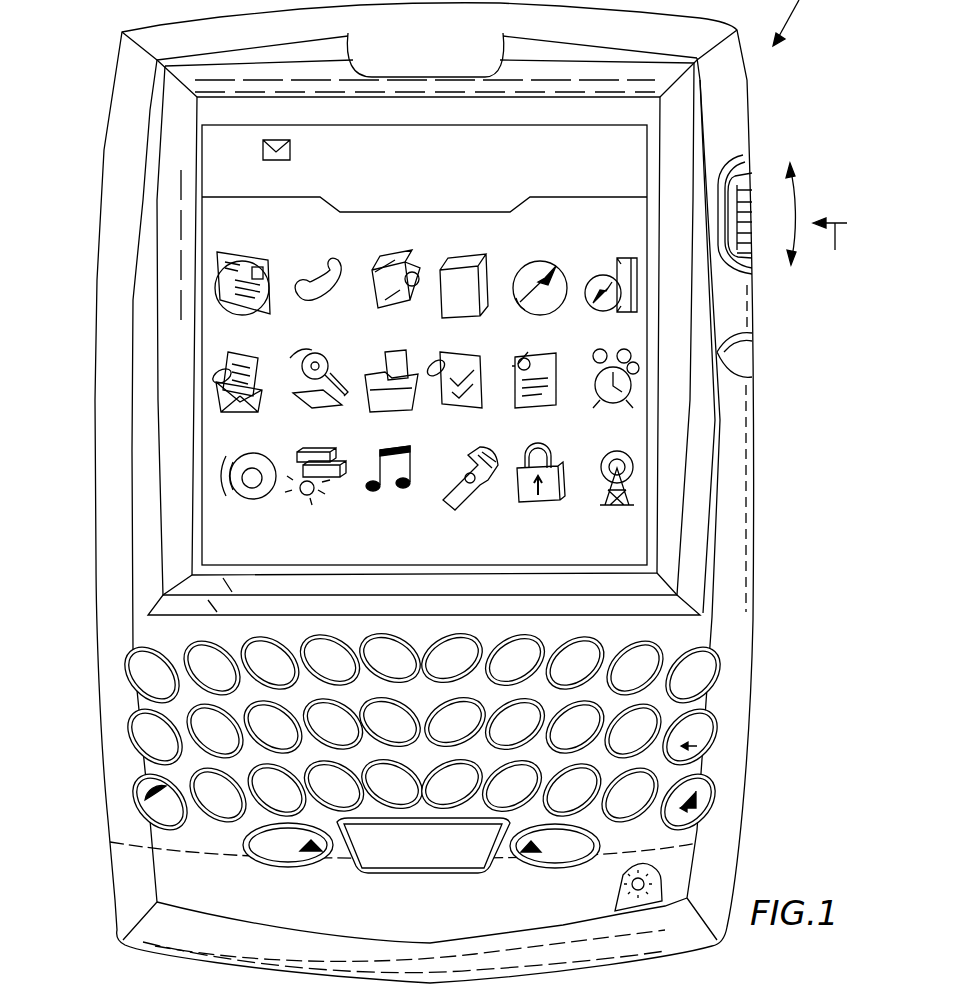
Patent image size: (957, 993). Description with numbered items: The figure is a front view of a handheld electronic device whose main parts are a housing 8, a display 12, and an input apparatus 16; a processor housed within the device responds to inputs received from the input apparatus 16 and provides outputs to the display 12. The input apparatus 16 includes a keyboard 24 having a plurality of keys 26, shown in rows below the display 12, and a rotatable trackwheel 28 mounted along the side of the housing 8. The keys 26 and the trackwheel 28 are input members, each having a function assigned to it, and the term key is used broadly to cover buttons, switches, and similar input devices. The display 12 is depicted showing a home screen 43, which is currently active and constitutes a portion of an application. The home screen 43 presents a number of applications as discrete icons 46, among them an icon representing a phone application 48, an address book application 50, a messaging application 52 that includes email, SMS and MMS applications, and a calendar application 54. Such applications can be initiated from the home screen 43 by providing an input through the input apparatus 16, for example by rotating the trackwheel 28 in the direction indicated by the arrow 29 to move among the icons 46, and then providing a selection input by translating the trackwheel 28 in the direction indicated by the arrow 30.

The housing 8 is at (735, 105).
The display 12 is at (610, 160).
The input apparatus 16 is at (470, 258).
The keyboard 24 is at (427, 734).
The keys 26 is at (127, 667).
The rotatable trackwheel 28 is at (755, 197).
The arrow 29 is at (800, 203).
The arrow 30 is at (830, 249).
The home screen 43 is at (223, 222).
The icons 46 is at (424, 371).
The phone application 48 is at (328, 300).
The address book application 50 is at (386, 308).
The messaging application 52 is at (238, 316).
The calendar application 54 is at (488, 316).